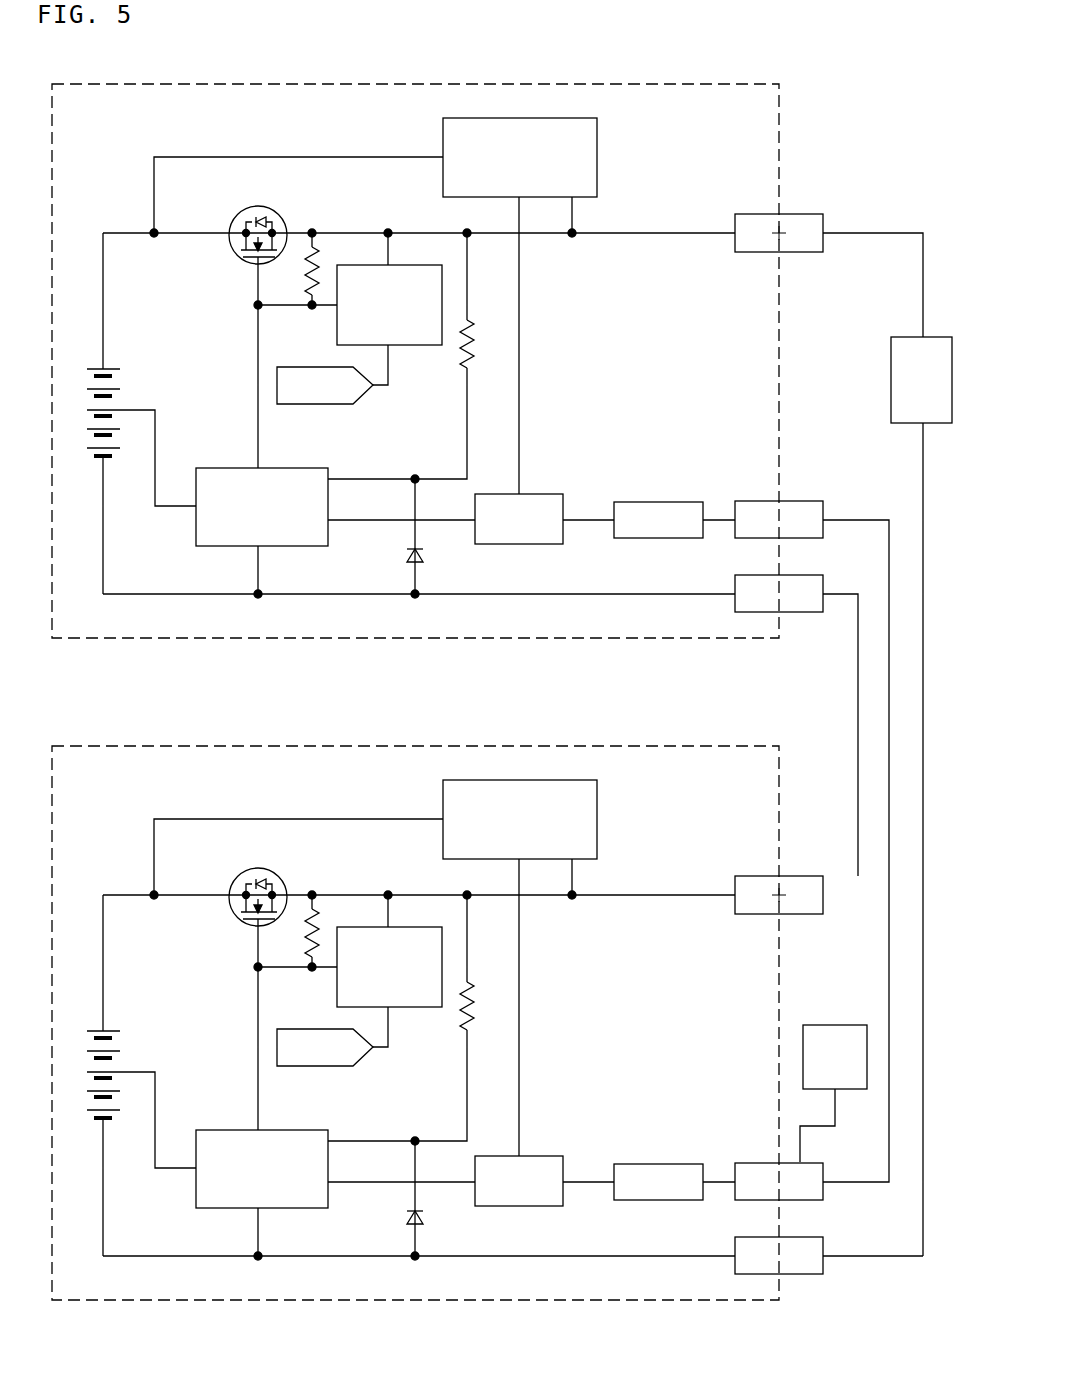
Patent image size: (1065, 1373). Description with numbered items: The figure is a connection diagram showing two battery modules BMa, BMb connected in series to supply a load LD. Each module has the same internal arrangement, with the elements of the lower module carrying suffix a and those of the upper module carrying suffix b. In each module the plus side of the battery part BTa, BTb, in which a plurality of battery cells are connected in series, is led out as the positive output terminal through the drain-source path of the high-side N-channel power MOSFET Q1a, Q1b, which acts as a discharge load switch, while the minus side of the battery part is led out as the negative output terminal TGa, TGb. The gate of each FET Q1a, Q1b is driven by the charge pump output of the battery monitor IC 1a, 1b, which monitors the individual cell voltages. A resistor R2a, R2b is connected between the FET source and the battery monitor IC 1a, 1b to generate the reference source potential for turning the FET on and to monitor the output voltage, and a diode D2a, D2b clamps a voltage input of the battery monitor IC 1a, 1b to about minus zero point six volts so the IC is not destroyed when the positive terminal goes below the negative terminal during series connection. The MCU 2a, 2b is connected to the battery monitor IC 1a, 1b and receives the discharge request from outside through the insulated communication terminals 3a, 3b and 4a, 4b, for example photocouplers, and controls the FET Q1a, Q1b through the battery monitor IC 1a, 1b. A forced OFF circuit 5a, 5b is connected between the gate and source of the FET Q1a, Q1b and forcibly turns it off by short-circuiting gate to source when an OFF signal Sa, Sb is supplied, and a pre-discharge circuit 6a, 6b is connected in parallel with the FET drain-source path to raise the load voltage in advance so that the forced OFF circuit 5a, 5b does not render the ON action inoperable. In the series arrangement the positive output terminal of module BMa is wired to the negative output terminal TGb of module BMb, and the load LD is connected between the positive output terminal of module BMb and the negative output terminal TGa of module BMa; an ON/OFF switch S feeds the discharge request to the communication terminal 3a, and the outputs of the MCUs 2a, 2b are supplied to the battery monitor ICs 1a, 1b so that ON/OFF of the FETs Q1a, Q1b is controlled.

The battery module BMb is at (596, 85).
The battery module BMa is at (415, 1009).
The pre-discharge circuit 6b is at (443, 183).
The pre-discharge circuit 6a is at (494, 819).
The FET Q1b is at (238, 259).
The FET Q1a is at (231, 911).
The battery part BTb is at (118, 380).
The battery part BTa is at (120, 1057).
The battery monitor IC 1b is at (228, 468).
The battery monitor IC 1a is at (255, 1155).
The OFF signal Sb is at (312, 404).
The OFF signal Sa is at (325, 1062).
The forced OFF circuit 5b is at (424, 346).
The forced OFF circuit 5a is at (389, 989).
The resistor R2b is at (462, 353).
The resistor R2a is at (487, 1019).
The diode D2b is at (425, 556).
The diode D2a is at (448, 1223).
The MCU 2b is at (520, 545).
The MCU 2a is at (522, 1196).
The communication terminal 4b is at (655, 502).
The communication terminal 4a is at (656, 1168).
The communication terminal 3b is at (757, 501).
The communication terminal 3a is at (766, 1168).
The negative output terminal TGb is at (757, 575).
The negative output terminal TGa is at (757, 1243).
The load LD is at (891, 382).
The OFF signal S is at (840, 1025).